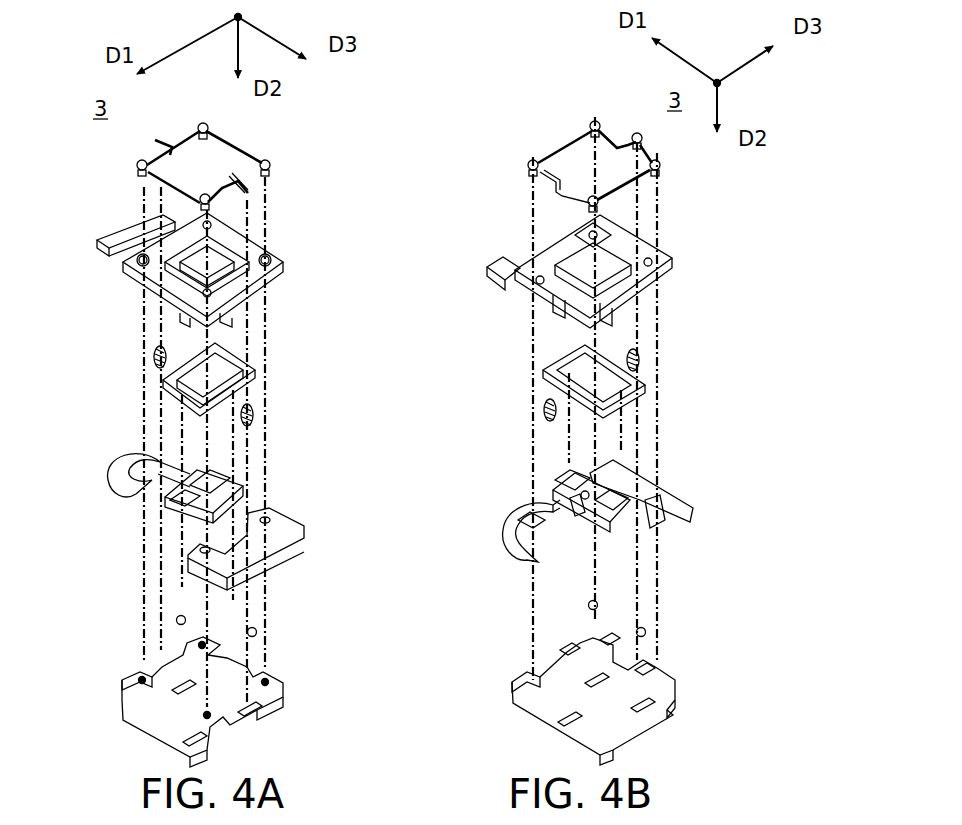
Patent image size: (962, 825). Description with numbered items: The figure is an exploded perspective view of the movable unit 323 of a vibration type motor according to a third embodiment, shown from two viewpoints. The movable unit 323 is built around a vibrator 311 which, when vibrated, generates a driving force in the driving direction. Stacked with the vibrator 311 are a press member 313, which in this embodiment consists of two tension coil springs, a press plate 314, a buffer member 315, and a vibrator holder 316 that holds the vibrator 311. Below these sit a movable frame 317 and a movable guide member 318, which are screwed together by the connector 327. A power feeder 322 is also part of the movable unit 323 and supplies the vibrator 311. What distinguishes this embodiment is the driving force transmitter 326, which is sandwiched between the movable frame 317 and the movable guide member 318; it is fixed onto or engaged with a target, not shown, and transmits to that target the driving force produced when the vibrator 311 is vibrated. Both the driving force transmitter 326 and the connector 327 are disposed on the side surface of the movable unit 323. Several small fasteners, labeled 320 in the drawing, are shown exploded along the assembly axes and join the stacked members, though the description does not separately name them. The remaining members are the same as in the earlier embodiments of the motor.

In FIG. 4A, the vibrator 311 is at (250, 470).
In FIG. 4B, the vibrator 311 is at (557, 463).
In FIG. 4A, the press member 313 is at (227, 402).
In FIG. 4B, the press member 313 is at (570, 412).
In FIG. 4A, the press plate 314 is at (230, 157).
In FIG. 4B, the press plate 314 is at (567, 163).
In FIG. 4A, the buffer member 315 is at (243, 243).
In FIG. 4A, the vibrator holder 316 is at (243, 355).
In FIG. 4A, the movable frame 317 is at (247, 283).
In FIG. 4A, the movable guide member 318 is at (223, 688).
In FIG. 4B, the movable guide member 318 is at (527, 710).
In FIG. 4A, the fastener 320 is at (183, 622).
In FIG. 4B, the fastener 320 is at (640, 633).
In FIG. 4A, the power feeder 322 is at (135, 452).
In FIG. 4B, the power feeder 322 is at (517, 515).
In FIG. 4A, the movable unit 323 is at (295, 130).
In FIG. 4B, the movable unit 323 is at (527, 112).
In FIG. 4A, the driving force transmitter 326 is at (273, 550).
In FIG. 4B, the driving force transmitter 326 is at (637, 498).
In FIG. 4A, the connector 327 is at (262, 258).
In FIG. 4B, the connector 327 is at (450, 283).